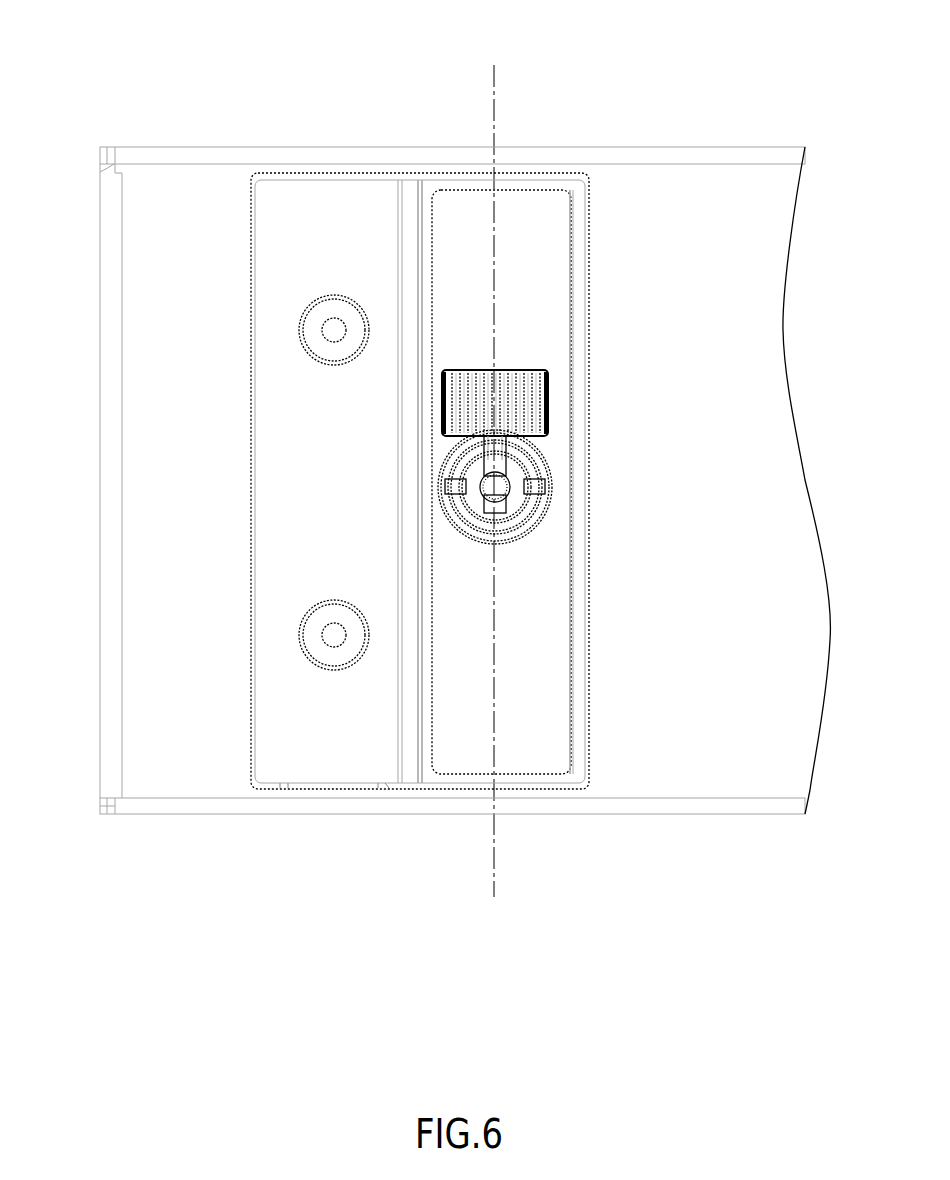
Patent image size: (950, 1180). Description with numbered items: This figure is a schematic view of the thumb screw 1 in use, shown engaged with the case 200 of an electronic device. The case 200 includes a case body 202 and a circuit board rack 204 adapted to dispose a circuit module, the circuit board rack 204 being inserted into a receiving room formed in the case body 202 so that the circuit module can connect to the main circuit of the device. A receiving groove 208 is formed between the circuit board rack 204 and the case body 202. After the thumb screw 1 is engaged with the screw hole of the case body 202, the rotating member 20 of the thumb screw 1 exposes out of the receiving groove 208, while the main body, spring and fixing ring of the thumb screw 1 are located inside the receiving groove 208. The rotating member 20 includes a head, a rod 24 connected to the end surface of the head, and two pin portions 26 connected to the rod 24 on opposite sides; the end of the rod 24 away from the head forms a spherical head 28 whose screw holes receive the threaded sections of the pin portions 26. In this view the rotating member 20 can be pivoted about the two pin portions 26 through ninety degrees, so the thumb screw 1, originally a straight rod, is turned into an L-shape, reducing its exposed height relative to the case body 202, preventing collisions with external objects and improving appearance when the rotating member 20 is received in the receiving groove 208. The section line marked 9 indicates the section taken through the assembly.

The thumb screw 1 is at (574, 427).
The rotating member 20 is at (520, 405).
The rod 24 is at (498, 450).
The pin portions 26 is at (533, 486).
The spherical head 28 is at (498, 492).
The case 200 is at (157, 144).
The case body 202 is at (733, 764).
The circuit board rack 204 is at (318, 749).
The receiving groove 208 is at (470, 741).
The section line 9- 9 is at (505, 91).